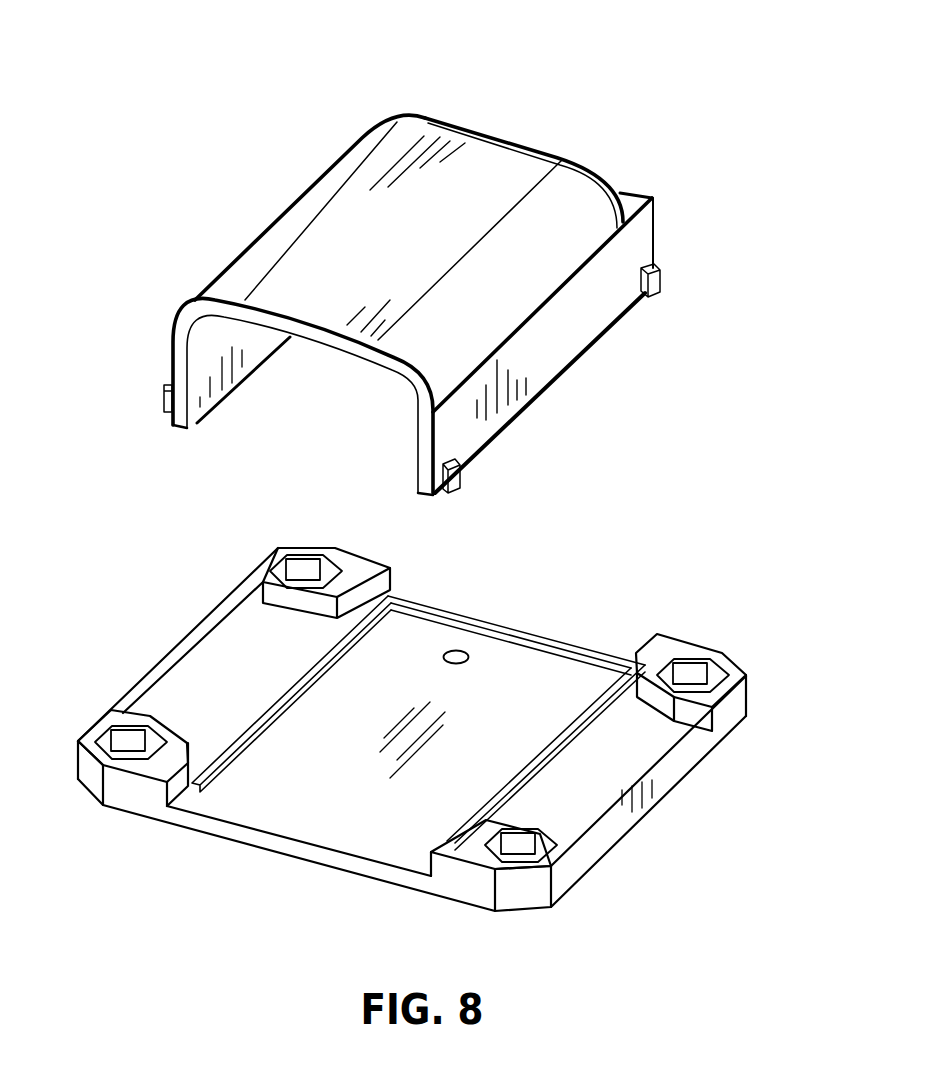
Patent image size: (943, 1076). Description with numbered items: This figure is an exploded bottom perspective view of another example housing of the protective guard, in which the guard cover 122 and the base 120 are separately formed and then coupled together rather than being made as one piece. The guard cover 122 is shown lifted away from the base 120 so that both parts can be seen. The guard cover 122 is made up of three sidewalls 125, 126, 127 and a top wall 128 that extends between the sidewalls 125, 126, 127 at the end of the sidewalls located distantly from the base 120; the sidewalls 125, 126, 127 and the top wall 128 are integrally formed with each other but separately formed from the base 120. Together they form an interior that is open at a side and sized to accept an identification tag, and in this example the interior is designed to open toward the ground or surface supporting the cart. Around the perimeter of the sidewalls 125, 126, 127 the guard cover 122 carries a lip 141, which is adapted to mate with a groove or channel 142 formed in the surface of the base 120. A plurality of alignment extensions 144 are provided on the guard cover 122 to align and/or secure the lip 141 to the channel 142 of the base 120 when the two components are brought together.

The base 120 is at (410, 710).
The guard cover 122 is at (420, 264).
The sidewall 125 is at (178, 357).
The sidewall 126 is at (380, 176).
The sidewall 127 is at (534, 357).
The top wall 128 is at (523, 137).
The lip 141 is at (521, 418).
The channel 142 is at (272, 714).
The alignment extensions 144 is at (163, 400).